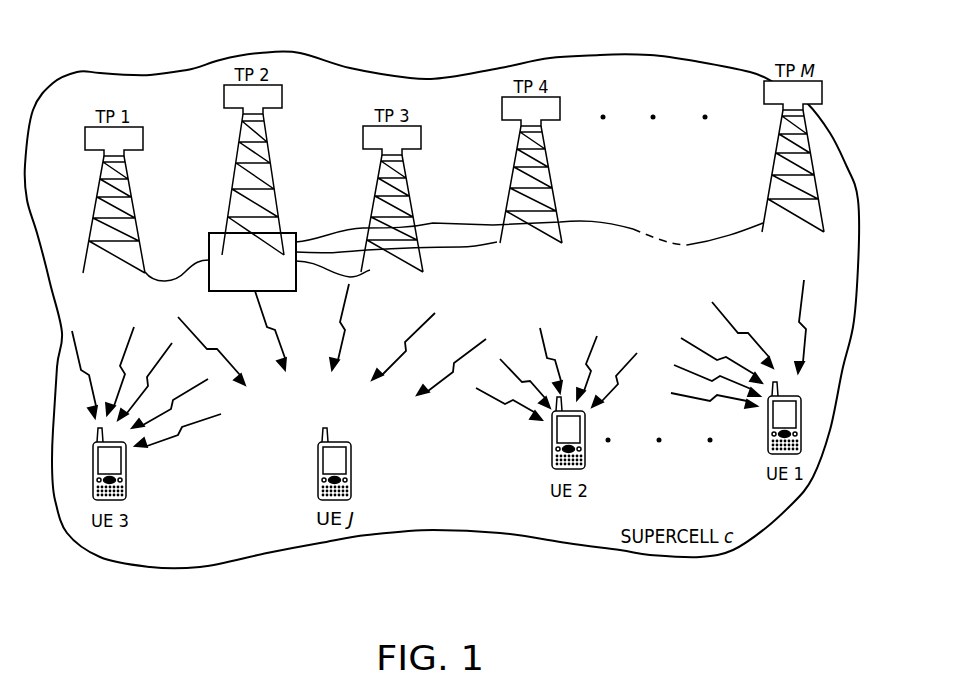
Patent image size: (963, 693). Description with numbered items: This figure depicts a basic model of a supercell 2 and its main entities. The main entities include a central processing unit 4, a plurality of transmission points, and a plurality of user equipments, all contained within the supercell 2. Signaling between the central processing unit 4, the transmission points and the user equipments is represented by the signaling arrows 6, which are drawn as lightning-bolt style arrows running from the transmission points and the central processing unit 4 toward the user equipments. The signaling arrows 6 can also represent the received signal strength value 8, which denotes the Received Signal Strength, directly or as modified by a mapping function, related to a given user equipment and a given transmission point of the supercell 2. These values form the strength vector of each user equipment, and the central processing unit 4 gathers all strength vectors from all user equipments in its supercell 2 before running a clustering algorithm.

The supercell 2 is at (632, 55).
The central processing unit (CPU) 4 is at (209, 245).
The signaling arrows 6 is at (78, 338).
The V_{j,m,c} 8 is at (238, 422).